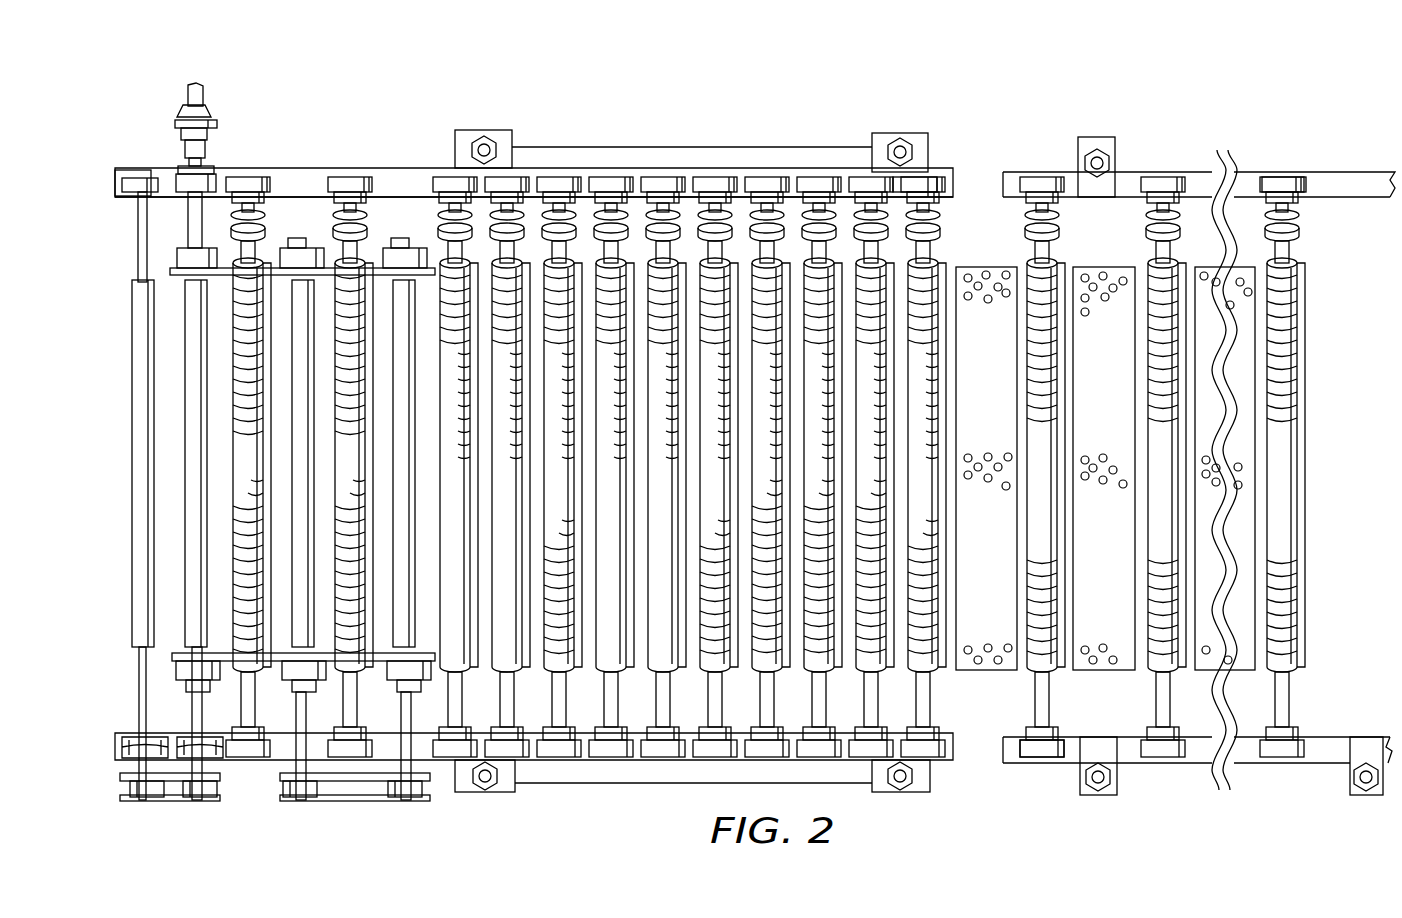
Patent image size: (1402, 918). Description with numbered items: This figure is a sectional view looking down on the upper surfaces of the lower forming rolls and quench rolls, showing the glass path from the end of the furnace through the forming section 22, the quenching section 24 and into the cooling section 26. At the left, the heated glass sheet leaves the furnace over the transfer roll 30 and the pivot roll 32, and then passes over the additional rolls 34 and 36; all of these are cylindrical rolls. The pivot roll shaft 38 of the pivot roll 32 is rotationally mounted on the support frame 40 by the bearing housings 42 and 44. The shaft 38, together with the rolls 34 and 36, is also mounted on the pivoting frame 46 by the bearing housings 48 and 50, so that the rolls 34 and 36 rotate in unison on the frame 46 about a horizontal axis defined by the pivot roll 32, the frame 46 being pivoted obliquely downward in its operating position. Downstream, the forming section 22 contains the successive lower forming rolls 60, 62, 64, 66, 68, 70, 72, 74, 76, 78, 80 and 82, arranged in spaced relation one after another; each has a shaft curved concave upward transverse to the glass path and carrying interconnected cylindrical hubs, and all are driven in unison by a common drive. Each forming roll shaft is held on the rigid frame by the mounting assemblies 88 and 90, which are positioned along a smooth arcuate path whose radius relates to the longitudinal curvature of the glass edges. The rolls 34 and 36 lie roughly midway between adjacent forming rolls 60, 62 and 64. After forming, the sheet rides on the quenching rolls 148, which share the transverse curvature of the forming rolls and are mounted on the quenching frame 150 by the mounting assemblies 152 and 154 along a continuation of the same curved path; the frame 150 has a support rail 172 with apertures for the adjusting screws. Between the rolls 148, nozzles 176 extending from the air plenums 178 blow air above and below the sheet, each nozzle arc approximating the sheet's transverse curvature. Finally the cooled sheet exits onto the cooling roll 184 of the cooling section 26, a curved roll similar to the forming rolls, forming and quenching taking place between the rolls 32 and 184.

The forming section 22 is at (712, 59).
The quenching section 24 is at (1032, 88).
The cooling section 26 is at (1296, 102).
The transfer roll 30 is at (132, 331).
The pivot roll 32 is at (185, 283).
The additional roll 34 is at (290, 455).
The additional roll 36 is at (400, 509).
The pivot roll shaft 38 is at (188, 206).
The support frame 40 is at (429, 168).
The bearing housing 42 is at (180, 738).
The bearing housing 44 is at (186, 172).
The pivoting frame 46 is at (240, 659).
The bearing housing 48 is at (190, 674).
The bearing housing 50 is at (178, 250).
The lower forming roll 60 is at (238, 264).
The lower forming roll 62 is at (342, 264).
The lower forming roll 64 is at (446, 286).
The lower forming roll 66 is at (496, 298).
The lower forming roll 68 is at (548, 298).
The lower forming roll 70 is at (600, 298).
The lower forming roll 72 is at (652, 298).
The lower forming roll 74 is at (704, 298).
The lower forming roll 76 is at (756, 300).
The lower forming roll 78 is at (808, 300).
The lower forming roll 80 is at (860, 300).
The lower forming roll 82 is at (912, 300).
The mounting assembly 88 is at (958, 725).
The mounting assembly 90 is at (950, 184).
The quenching roll 148 is at (1148, 660).
The quenching frame 150 is at (1272, 762).
The mounting assembly 152 is at (1045, 759).
The mounting assembly 154 is at (1048, 180).
The support rail 172 is at (1286, 176).
The nozzle 176 is at (1085, 266).
The air plenum 178 is at (1124, 267).
The cooling roll 184 is at (1298, 656).